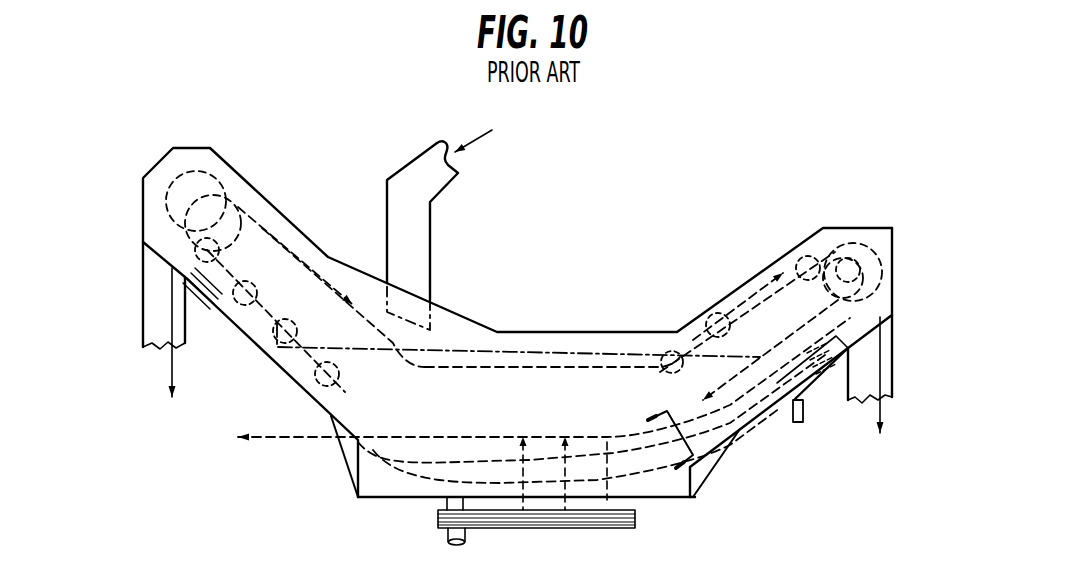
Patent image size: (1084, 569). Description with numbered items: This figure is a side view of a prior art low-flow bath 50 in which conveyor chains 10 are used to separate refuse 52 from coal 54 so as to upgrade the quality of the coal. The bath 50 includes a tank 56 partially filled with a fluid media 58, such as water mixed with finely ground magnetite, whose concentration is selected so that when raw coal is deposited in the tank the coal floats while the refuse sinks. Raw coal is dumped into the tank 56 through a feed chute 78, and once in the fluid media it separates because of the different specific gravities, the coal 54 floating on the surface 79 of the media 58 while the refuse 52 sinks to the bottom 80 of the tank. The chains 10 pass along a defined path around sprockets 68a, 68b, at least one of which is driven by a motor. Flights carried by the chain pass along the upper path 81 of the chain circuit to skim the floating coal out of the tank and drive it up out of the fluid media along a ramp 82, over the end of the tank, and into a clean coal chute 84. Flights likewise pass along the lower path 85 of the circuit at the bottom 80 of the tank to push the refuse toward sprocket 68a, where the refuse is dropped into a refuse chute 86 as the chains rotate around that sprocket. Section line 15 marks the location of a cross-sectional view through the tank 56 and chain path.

The conveyor chain 10 is at (750, 387).
The section line 15- 15 is at (651, 449).
The low-flow bath 50 is at (717, 220).
The refuse 52 is at (246, 303).
The coal 54 is at (713, 322).
The tank 56 is at (697, 498).
The fluid media 58 is at (610, 350).
The sprocket 68a is at (220, 198).
The sprocket 68b is at (840, 247).
The feed chute 78 is at (400, 172).
The surface 79 is at (480, 350).
The bottom 80 is at (288, 368).
The upper path 81 is at (285, 250).
The ramp 82 is at (775, 312).
The clean coal chute 84 is at (893, 357).
The lower path 85 is at (353, 437).
The refuse chute 86 is at (142, 306).